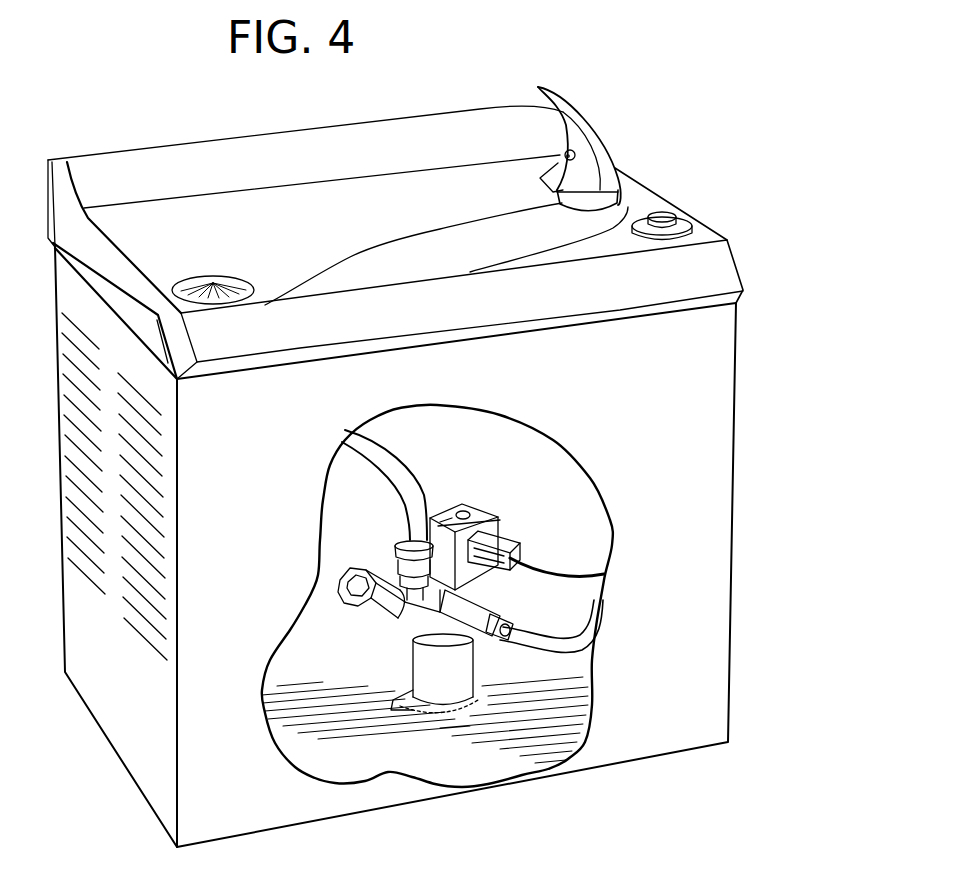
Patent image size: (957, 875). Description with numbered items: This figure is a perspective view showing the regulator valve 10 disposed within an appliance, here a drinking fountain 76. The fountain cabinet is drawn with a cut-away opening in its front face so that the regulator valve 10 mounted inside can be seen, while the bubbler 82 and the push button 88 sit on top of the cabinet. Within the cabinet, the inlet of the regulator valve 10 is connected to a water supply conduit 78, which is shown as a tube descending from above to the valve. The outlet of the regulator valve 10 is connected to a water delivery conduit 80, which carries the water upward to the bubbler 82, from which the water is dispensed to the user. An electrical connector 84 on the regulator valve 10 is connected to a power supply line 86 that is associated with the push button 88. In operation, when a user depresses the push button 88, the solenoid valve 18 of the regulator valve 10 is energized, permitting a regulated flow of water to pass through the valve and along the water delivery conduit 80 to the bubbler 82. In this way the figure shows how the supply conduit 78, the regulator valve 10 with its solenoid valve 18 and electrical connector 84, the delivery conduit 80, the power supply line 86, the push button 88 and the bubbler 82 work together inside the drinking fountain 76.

The regulator valve 10 is at (369, 548).
The solenoid valve 18 is at (436, 520).
The drinking fountain 76 is at (738, 462).
The water supply conduit 78 is at (383, 452).
The water delivery conduit 80 is at (543, 637).
The bubbler 82 is at (606, 174).
The electrical connector 84 is at (512, 528).
The power supply line 86 is at (545, 573).
The push button 88 is at (663, 217).